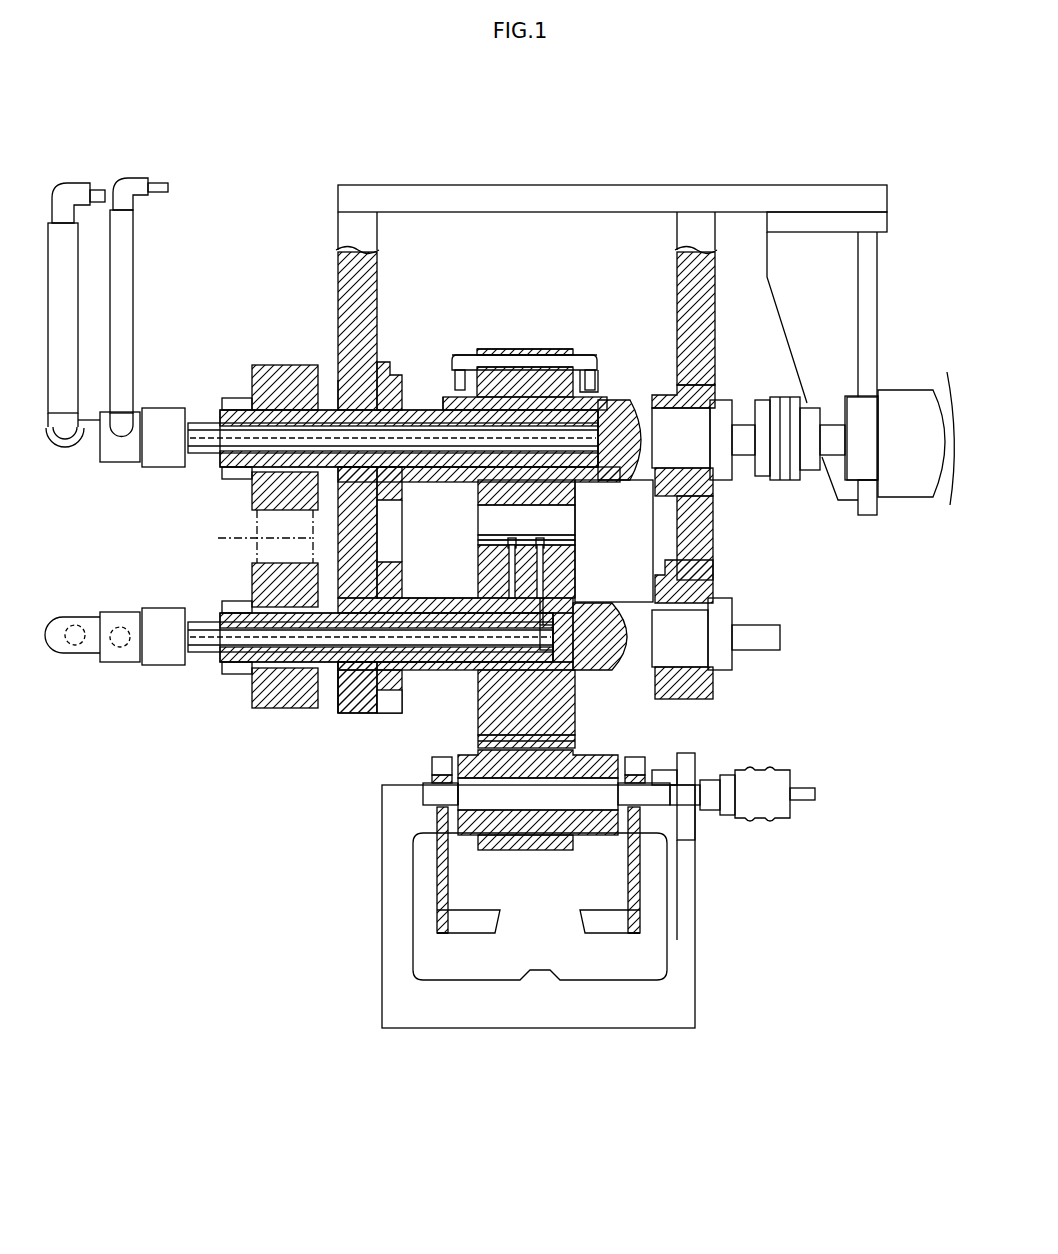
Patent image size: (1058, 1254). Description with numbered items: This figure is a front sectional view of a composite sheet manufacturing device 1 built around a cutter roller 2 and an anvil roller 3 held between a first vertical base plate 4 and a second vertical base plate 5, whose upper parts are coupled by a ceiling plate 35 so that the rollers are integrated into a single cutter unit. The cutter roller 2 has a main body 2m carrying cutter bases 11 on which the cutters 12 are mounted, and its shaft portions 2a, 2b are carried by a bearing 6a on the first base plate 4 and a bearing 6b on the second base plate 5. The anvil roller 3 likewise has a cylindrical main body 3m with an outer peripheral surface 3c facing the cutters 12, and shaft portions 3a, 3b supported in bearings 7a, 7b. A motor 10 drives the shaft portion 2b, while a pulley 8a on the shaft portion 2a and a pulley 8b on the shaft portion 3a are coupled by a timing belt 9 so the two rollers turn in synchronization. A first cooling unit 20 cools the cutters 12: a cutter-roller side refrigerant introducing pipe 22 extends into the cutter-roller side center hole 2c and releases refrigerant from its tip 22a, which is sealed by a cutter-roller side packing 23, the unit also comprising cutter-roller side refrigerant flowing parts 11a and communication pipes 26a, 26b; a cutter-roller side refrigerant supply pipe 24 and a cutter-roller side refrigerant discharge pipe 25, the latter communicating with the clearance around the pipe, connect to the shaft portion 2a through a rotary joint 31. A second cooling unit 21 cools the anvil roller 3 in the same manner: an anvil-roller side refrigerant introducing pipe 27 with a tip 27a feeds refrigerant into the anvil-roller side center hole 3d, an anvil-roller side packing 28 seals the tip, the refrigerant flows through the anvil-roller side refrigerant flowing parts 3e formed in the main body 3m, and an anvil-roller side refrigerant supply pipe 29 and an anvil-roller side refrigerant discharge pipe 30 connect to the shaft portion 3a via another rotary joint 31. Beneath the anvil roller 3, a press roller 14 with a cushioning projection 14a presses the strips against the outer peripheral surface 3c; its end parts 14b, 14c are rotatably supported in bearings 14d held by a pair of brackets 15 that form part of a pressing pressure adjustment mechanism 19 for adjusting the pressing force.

The composite sheet manufacturing device 1 is at (700, 168).
The cutter roller 2 is at (628, 400).
The shaft portion 2a is at (382, 378).
The shaft portion 2b is at (716, 410).
The cutter-roller side center hole 2c is at (470, 390).
The main body 2m is at (490, 485).
The anvil roller 3 is at (565, 692).
The shaft portion 3a is at (385, 682).
The shaft portion 3b is at (690, 635).
The outer peripheral surface 3c is at (577, 540).
The anvil-roller side center hole 3d is at (410, 615).
The anvil-roller side refrigerant flowing part 3e is at (526, 520).
The main body 3m is at (478, 692).
The first vertical base plate 4 is at (345, 240).
The second vertical base plate 5 is at (722, 232).
The bearing 6a is at (338, 392).
The bearing 6b is at (690, 394).
The bearing 7a is at (318, 682).
The bearing 7b is at (712, 680).
The pulley 8a is at (262, 493).
The pulley 8b is at (262, 580).
The timing belt 9 is at (244, 536).
The motor 10 is at (905, 388).
The cutter base 11 is at (528, 352).
The cutter-roller side refrigerant flowing part 11a is at (505, 350).
The cutter 12 is at (577, 515).
The press roller 14 is at (505, 822).
The cushioning projection 14a is at (478, 742).
The end part 14b is at (452, 795).
The end part 14c is at (616, 822).
The bearing 14d is at (432, 806).
The bracket 15 is at (437, 892).
The pressing pressure adjustment mechanism 19 is at (430, 876).
The first cooling unit 20 is at (575, 340).
The second cooling unit 21 is at (550, 607).
The cutter-roller side refrigerant introducing pipe 22 is at (408, 425).
The tip 22a is at (680, 484).
The cutter-roller side packing 23 is at (560, 372).
The cutter-roller side refrigerant supply pipe 24 is at (68, 182).
The cutter-roller side refrigerant discharge pipe 25 is at (136, 178).
The communication pipe 26a is at (600, 366).
The communication pipe 26b is at (458, 362).
The anvil-roller side refrigerant introducing pipe 27 is at (262, 634).
The tip 27a is at (556, 645).
The anvil-roller side packing 28 is at (545, 620).
The anvil-roller side refrigerant supply pipe 29 is at (85, 655).
The anvil-roller side refrigerant discharge pipe 30 is at (118, 655).
The rotary joint 31 is at (164, 408).
The ceiling plate 35 is at (524, 192).